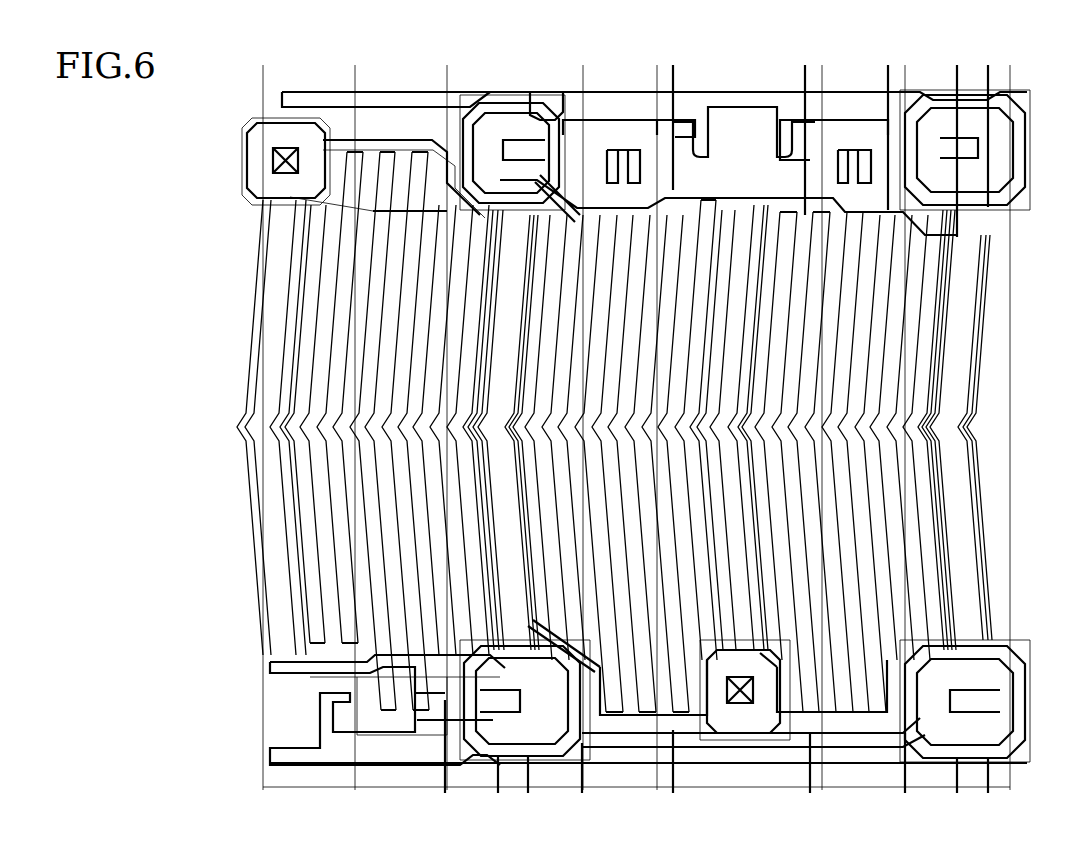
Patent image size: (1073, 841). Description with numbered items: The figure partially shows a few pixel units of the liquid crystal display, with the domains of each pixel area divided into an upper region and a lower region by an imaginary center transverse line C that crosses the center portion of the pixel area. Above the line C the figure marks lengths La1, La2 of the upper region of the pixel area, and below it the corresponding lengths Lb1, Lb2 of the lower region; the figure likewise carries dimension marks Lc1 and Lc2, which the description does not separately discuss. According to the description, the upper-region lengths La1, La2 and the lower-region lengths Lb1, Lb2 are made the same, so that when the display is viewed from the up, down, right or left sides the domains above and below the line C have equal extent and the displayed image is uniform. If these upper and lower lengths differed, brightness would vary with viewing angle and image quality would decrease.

The imaginary center transverse line C is at (1020, 427).
The length of the upper region of the pixel area La1 is at (385, 213).
The length of the upper region of the pixel area La2 is at (385, 427).
The length of the lower region of the pixel area Lb1 is at (625, 212).
The length of the lower region of the pixel area Lb2 is at (625, 427).
The upper length of third electrode region Lc1 is at (857, 213).
The lower length of third electrode region Lc2 is at (857, 427).